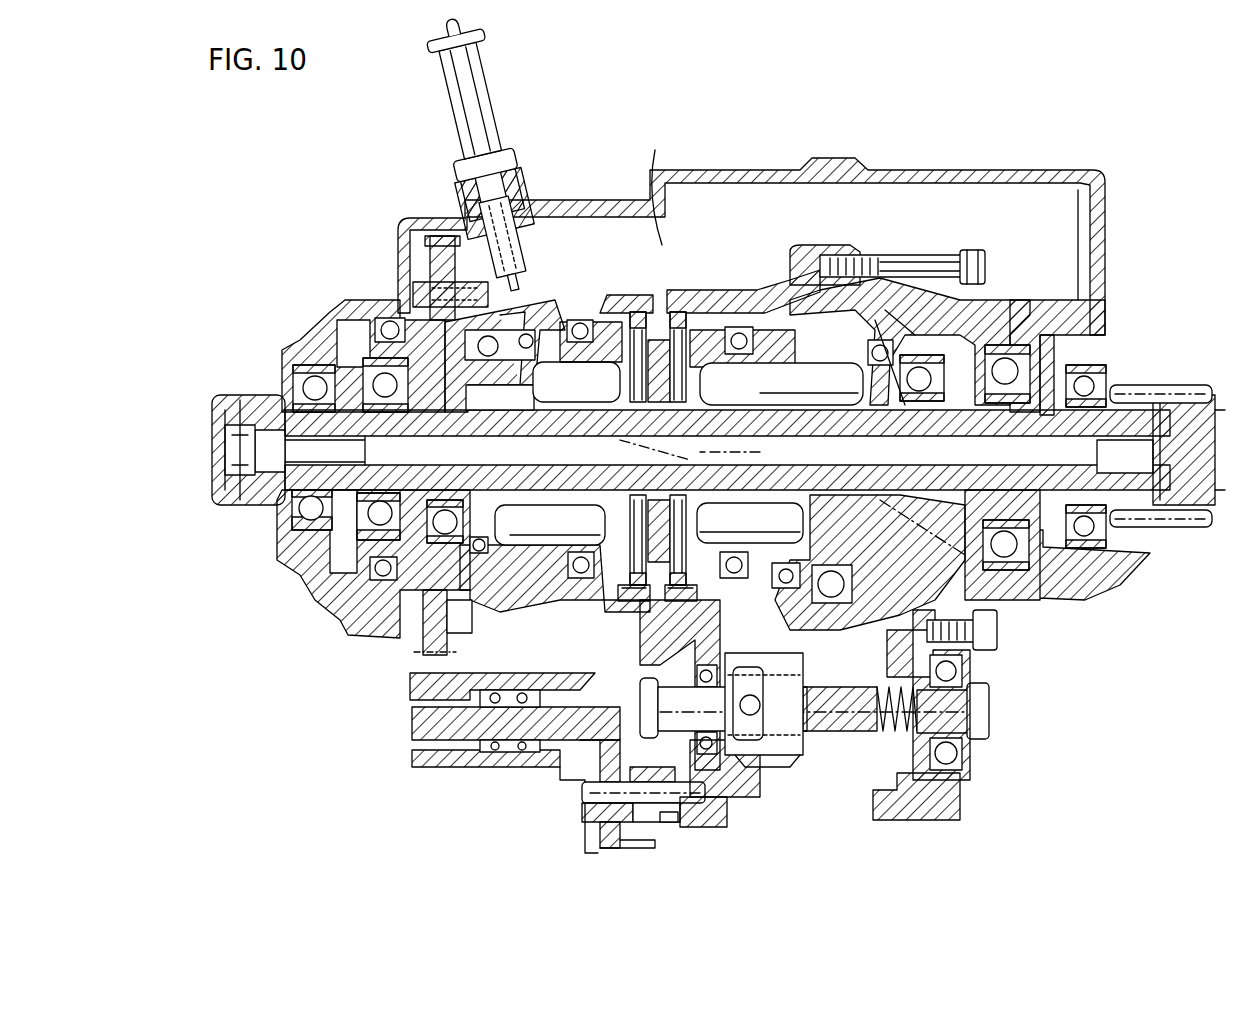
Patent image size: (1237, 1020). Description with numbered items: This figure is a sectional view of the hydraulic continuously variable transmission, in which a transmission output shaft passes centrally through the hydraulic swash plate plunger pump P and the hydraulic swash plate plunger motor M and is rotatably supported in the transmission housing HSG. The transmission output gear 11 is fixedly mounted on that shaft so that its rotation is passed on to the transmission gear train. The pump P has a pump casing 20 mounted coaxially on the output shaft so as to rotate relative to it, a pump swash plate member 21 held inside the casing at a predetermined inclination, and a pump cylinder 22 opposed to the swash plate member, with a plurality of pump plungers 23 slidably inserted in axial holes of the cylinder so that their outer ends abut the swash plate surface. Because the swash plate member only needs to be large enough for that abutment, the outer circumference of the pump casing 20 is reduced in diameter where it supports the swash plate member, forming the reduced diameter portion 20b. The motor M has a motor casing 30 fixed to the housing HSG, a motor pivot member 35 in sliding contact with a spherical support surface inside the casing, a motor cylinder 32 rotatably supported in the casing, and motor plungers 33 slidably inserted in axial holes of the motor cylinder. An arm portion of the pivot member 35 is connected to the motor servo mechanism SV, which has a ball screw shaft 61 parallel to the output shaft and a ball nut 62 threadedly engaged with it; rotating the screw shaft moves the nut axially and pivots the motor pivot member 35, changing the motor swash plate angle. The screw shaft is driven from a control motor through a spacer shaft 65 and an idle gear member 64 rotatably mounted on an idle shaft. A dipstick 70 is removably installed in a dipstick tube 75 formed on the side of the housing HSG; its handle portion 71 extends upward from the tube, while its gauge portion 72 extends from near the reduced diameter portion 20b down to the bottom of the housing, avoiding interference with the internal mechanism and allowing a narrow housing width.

The transmission output gear 11 is at (1178, 390).
The pump casing 20 is at (633, 295).
The reduced diameter portion 20b is at (530, 313).
The pump swash plate member 21 is at (537, 350).
The pump cylinder 22 is at (527, 588).
The pump plungers 23 is at (550, 482).
The motor casing 30 is at (910, 250).
The motor cylinder 32 is at (779, 357).
The motor plungers 33 is at (809, 375).
The motor pivot member 35 is at (876, 622).
The ball screw shaft 61 is at (870, 733).
The ball nut 62 is at (767, 767).
The idle gear member 64 is at (631, 823).
The spacer shaft 65 is at (558, 748).
The dipstick 70 is at (511, 150).
The handle portion 71 is at (457, 121).
The gauge portion 72 is at (516, 290).
The dipstick tube 75 is at (517, 183).
The transmission housing HSG is at (318, 325).
The hydraulic swash plate plunger pump P is at (665, 240).
The hydraulic swash plate plunger motor M is at (999, 231).
The motor servo mechanism SV is at (510, 806).